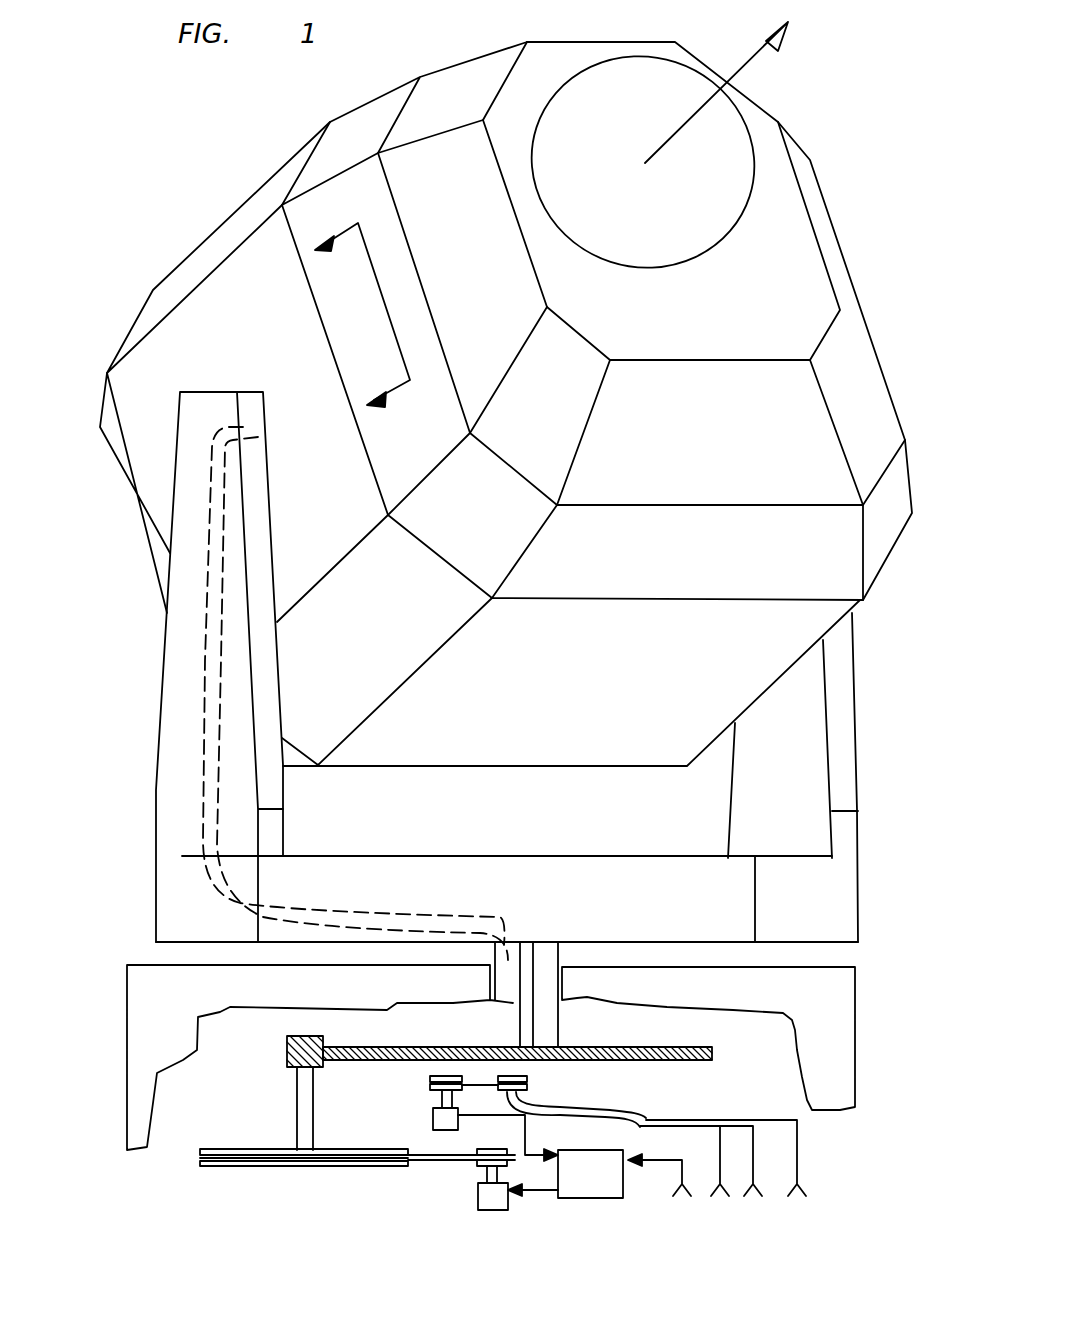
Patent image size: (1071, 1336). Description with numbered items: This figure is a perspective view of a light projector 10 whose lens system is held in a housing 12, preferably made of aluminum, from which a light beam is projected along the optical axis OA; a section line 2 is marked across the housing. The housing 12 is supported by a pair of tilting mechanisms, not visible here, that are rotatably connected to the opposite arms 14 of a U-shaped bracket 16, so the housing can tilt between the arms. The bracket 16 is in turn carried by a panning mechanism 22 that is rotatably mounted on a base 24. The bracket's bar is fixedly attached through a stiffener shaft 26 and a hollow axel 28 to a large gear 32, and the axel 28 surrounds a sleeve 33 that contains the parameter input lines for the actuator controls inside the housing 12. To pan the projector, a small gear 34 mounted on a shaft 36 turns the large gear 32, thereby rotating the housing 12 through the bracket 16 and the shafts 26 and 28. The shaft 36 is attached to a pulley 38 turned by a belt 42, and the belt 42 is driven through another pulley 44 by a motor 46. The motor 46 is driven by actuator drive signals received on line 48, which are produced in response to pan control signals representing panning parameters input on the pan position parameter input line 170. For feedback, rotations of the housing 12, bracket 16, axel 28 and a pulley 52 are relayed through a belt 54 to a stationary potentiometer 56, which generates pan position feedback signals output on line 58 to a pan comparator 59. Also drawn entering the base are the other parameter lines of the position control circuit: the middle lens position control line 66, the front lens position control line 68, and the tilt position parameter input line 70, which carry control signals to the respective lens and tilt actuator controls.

The light projector 10 is at (196, 218).
The housing 12 is at (203, 317).
The optical axis OA is at (762, 53).
The section line 2 is at (341, 338).
The arms 14 is at (180, 738).
The U-shaped bracket 16 is at (135, 877).
The panning mechanism 22 is at (193, 1190).
The base 24 is at (833, 1031).
The stiffener shaft 26 is at (556, 940).
The hollow axel 28 is at (507, 1007).
The large gear 32 is at (670, 1062).
The sleeve 33 is at (602, 1104).
The small gear 34 is at (287, 1042).
The shaft 36 is at (305, 1090).
The pulley 38 is at (260, 1167).
The belt 42 is at (200, 1157).
The pulley 44 is at (477, 1167).
The motor 46 is at (487, 1197).
The line 48 is at (537, 1195).
The pulley 52 is at (533, 1087).
The belt 54 is at (428, 1087).
The stationary potentiometer 56 is at (433, 1117).
The line 58 is at (523, 1135).
The pan comparator 59 is at (573, 1198).
The middle lens position control line 66 is at (798, 1160).
The front lens position control line 68 is at (760, 1160).
The tilt position parameter input line 70 is at (723, 1170).
The pan position parameter input line 170 is at (683, 1178).